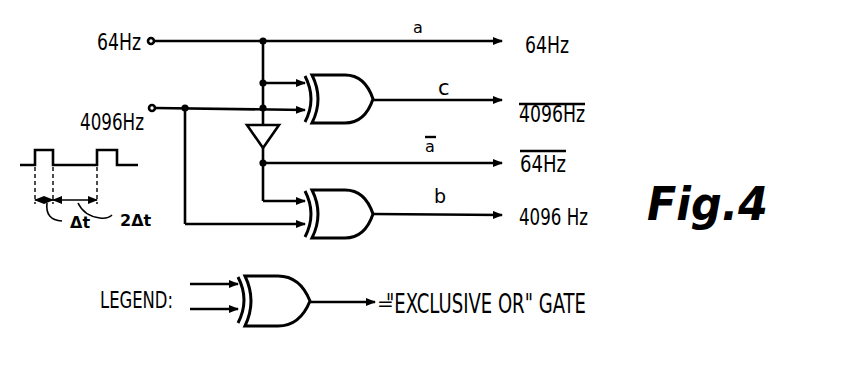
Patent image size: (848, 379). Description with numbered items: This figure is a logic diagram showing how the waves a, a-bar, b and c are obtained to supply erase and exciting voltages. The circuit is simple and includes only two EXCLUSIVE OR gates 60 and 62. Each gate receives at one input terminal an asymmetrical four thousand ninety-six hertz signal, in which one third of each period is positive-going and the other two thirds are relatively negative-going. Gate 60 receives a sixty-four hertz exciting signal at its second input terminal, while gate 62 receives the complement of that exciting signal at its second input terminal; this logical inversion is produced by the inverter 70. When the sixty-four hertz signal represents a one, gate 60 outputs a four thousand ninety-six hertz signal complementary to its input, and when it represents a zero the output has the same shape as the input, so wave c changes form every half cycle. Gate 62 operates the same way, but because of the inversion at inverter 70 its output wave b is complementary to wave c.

The EXCLUSIVE OR gate 60 is at (348, 108).
The EXCLUSIVE OR gate 62 is at (348, 226).
The inverter 70 is at (249, 146).